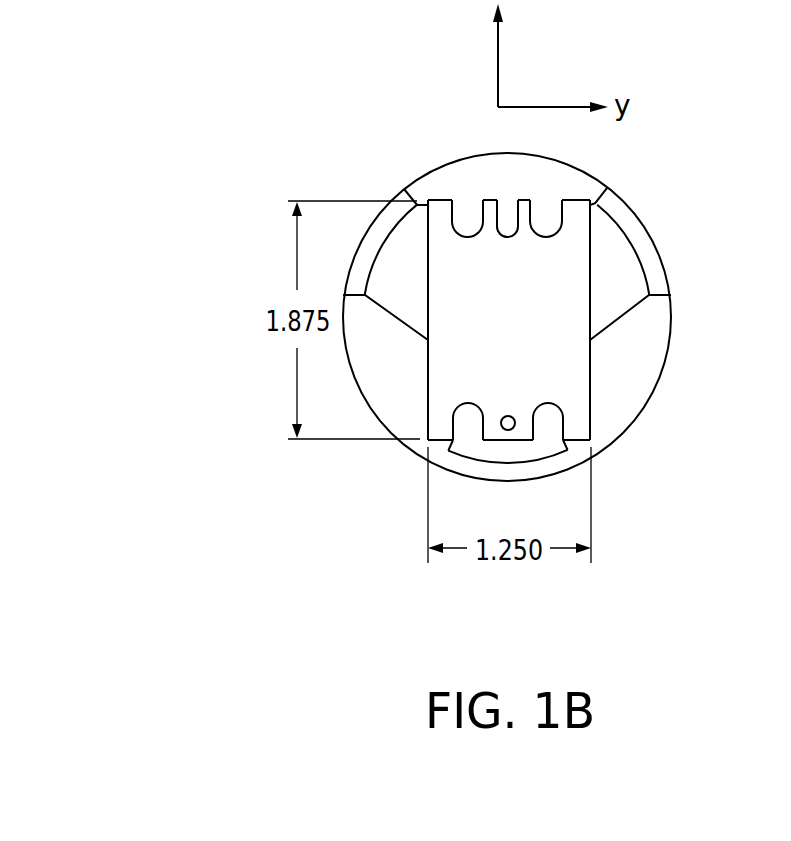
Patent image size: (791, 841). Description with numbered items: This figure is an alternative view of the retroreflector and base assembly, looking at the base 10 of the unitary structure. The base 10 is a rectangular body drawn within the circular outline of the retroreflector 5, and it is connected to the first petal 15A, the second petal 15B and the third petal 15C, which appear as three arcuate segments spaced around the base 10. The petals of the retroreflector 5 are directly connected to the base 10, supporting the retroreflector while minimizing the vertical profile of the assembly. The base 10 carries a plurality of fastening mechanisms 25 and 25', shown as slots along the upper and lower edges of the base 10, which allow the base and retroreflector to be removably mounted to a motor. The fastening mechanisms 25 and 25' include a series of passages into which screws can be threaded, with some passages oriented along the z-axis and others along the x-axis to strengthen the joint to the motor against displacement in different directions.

The retroreflector 5 is at (688, 401).
The base 10 is at (492, 340).
The first petal 15A is at (363, 235).
The second petal 15B is at (653, 232).
The third petal 15C is at (543, 480).
The fastening mechanism 25 is at (499, 159).
The fastening mechanism 25' is at (463, 464).